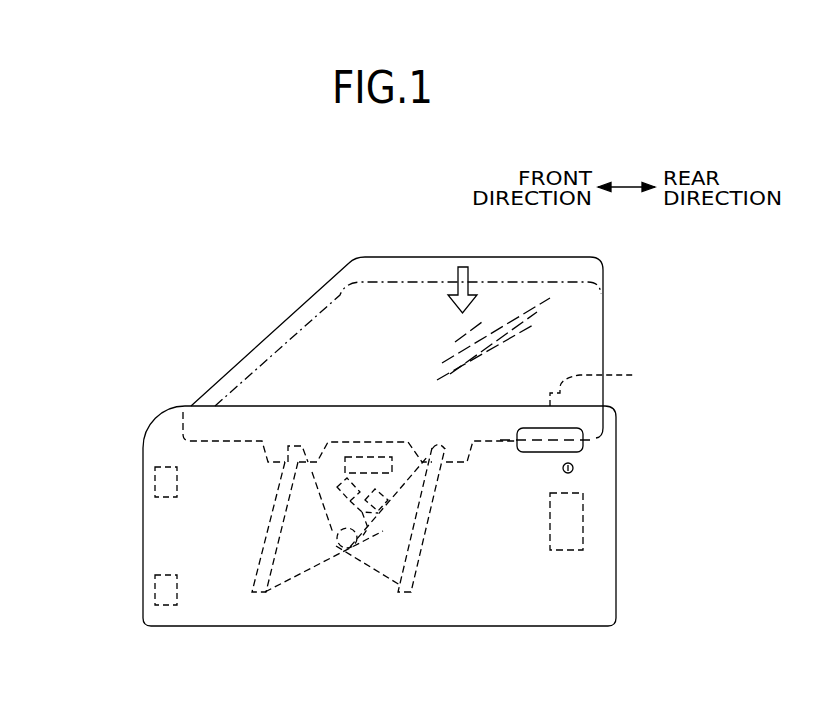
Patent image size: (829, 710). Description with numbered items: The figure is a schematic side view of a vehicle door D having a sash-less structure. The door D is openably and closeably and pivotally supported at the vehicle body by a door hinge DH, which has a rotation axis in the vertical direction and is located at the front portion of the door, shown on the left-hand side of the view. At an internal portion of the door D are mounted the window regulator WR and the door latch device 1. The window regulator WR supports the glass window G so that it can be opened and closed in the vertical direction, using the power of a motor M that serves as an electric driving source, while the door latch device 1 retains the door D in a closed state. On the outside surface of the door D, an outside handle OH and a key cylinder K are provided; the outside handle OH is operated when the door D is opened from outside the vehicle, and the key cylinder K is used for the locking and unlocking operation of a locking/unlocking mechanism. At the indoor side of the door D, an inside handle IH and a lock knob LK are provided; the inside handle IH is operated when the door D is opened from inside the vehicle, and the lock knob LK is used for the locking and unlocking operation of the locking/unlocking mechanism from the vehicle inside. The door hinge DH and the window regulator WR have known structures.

The door latch device 1 is at (583, 517).
The door D is at (616, 458).
The glass window G is at (603, 322).
The lock knob LK is at (606, 387).
The outside handle OH is at (583, 446).
The key cylinder K is at (573, 469).
The inside handle IH is at (363, 457).
The door hinge DH is at (155, 585).
The window regulator WR is at (420, 558).
The motor M is at (388, 520).